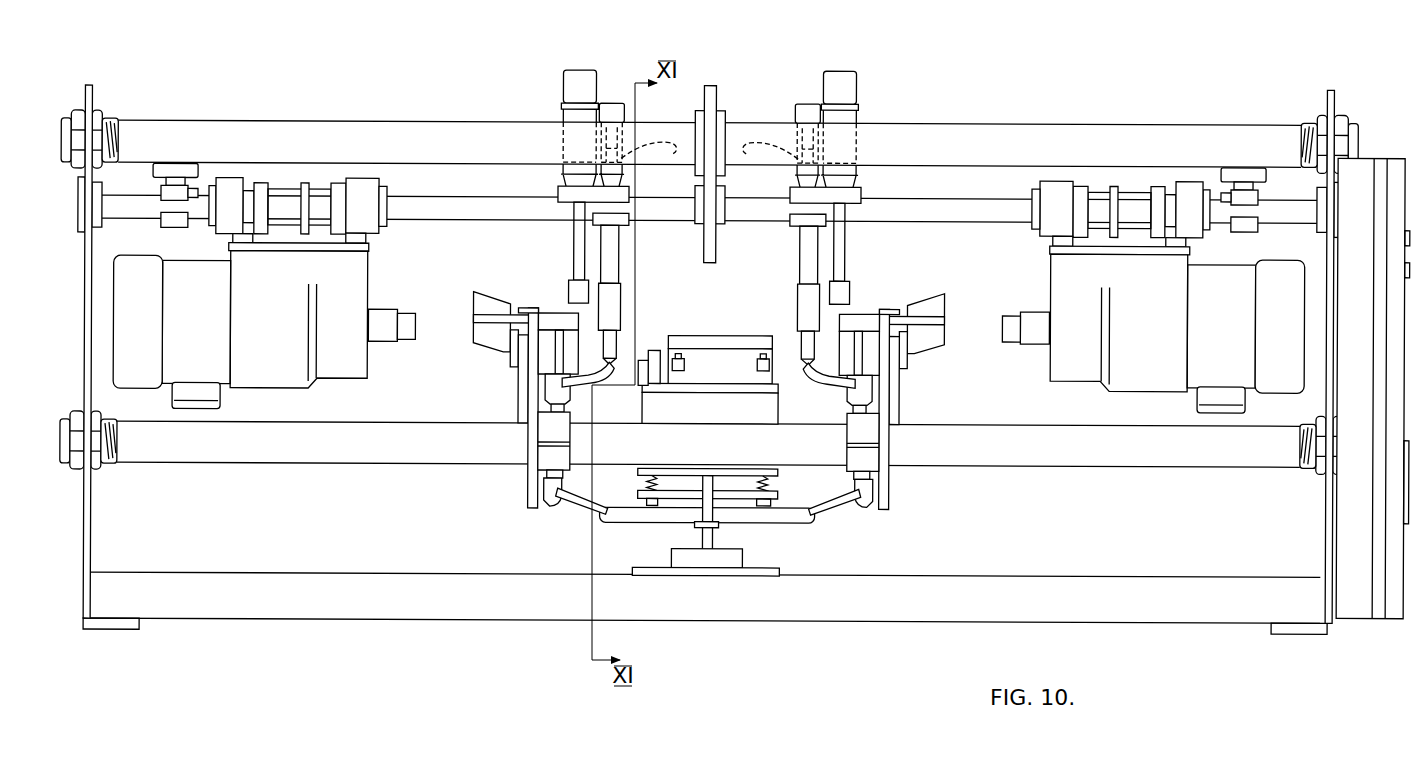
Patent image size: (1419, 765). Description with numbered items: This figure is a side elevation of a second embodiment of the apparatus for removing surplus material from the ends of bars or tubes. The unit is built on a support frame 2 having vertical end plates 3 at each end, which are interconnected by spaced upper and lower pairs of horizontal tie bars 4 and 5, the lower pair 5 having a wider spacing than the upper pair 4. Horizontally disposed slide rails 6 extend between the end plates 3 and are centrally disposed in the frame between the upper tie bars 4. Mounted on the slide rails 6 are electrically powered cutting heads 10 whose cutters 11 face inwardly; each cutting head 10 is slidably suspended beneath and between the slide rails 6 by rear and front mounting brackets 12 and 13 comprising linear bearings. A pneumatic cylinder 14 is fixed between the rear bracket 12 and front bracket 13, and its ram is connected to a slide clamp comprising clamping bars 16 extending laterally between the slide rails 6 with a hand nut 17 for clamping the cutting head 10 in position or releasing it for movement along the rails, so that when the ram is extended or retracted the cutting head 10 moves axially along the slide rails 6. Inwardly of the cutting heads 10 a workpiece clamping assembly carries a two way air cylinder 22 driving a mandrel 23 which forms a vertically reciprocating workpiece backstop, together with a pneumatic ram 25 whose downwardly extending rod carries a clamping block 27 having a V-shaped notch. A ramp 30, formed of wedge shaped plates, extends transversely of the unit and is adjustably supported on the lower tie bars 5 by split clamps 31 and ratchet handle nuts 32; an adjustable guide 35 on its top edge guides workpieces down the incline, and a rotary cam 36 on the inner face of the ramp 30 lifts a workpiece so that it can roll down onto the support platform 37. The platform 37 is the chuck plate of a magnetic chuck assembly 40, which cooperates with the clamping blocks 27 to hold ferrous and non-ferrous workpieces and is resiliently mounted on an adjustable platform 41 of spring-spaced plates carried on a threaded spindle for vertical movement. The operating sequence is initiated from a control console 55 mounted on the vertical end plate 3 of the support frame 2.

The support frame 2 is at (1292, 546).
The vertical end plate 3 is at (93, 94).
The upper tie bars 4 is at (266, 128).
The lower tie bars 5 is at (282, 455).
The slide rails 6 is at (419, 212).
The cutting head 10 is at (275, 335).
The cutter 11 is at (411, 310).
The rear mounting bracket 12 is at (357, 200).
The front mounting bracket 13 is at (229, 186).
The pneumatic cylinder 14 is at (288, 196).
The clamping bars 16 is at (160, 222).
The hand nut 17 is at (165, 163).
The two way air cylinder 22 is at (605, 103).
The mandrel 23 is at (614, 342).
The pneumatic ram 25 is at (566, 80).
The clamping block 27 is at (571, 284).
The ramp 30 is at (692, 404).
The split clamps 31 is at (528, 408).
The ratchet handle nuts 32 is at (576, 496).
The adjustable guide 35 is at (506, 357).
The rotary cam 36 is at (576, 395).
The support platform 37 is at (744, 341).
The magnetic chuck assembly 40 is at (704, 330).
The adjustable platform 41 is at (648, 531).
The control console 55 is at (1398, 160).